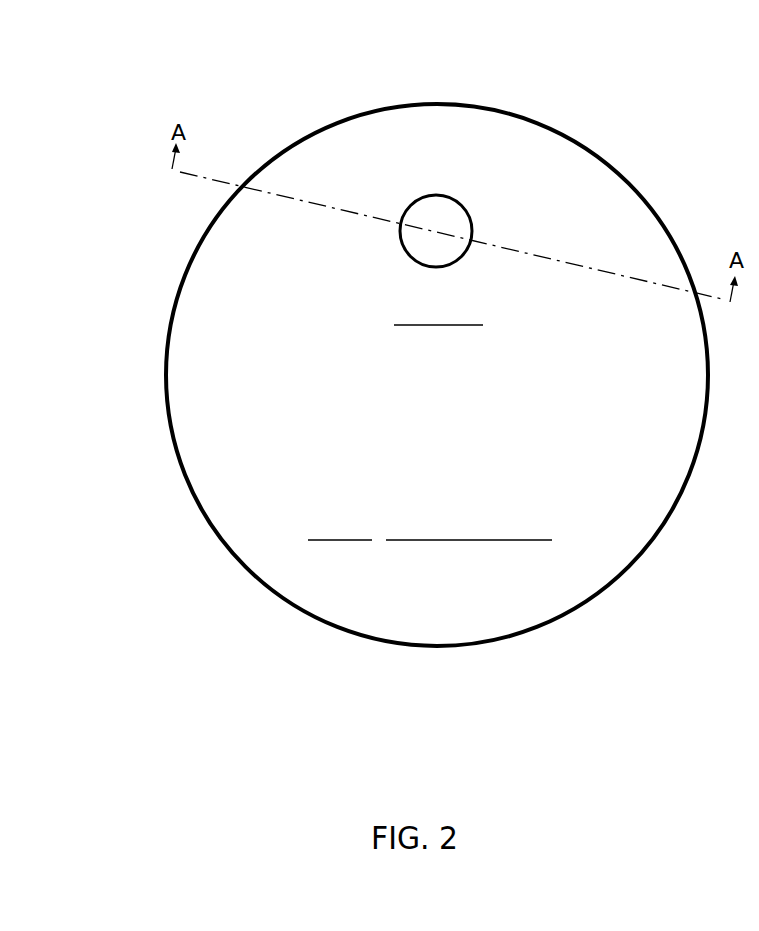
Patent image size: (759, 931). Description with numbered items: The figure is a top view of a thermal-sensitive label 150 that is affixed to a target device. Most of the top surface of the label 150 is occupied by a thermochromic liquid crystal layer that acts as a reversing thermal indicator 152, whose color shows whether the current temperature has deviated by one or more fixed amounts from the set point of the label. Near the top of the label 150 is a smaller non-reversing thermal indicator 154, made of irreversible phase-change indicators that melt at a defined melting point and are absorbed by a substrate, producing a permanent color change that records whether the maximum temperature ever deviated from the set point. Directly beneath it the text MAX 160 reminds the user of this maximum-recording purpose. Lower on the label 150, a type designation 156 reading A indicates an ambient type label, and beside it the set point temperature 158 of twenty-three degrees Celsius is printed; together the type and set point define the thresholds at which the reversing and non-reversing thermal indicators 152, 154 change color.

The thermal-sensitive label 150 is at (350, 115).
The reversing thermal indicator 152 is at (256, 367).
The non-reversing thermal indicator 154 is at (470, 212).
The type designation 156 is at (342, 541).
The set point temperature 158 is at (475, 541).
The text MAX 160 is at (440, 326).